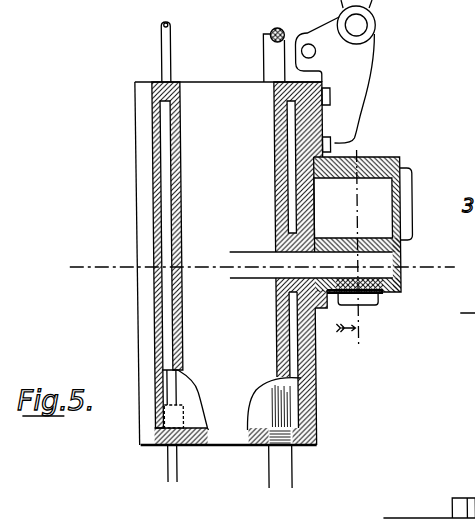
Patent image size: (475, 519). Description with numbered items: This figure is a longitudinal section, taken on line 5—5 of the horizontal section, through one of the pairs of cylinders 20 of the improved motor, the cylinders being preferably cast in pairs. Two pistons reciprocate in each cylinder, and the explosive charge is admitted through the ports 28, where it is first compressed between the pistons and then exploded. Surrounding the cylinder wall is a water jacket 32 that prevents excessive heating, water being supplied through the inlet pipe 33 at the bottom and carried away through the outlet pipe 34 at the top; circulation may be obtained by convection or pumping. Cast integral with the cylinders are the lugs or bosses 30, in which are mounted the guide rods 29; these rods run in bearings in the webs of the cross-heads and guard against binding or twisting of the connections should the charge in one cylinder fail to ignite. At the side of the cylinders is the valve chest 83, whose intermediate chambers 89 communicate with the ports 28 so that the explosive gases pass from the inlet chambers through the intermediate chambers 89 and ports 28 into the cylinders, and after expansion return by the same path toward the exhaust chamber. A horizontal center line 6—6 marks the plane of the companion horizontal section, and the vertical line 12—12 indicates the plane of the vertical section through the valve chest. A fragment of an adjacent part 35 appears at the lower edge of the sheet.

The cylinders 20 is at (232, 263).
The guide rods 29 is at (160, 55).
The lugs or bosses 30 is at (172, 422).
The water jacket 32 is at (160, 311).
The inlet pipe 33 is at (275, 468).
The outlet pipe 34 is at (267, 57).
The ports 28 is at (265, 273).
The valve chest 83 is at (382, 166).
The intermediate chambers 89 is at (374, 271).
The section line 12— 12 is at (336, 143).
The section line 6— 6 is at (258, 264).
The section line 5— 5 is at (461, 314).
The base member 35 is at (378, 517).